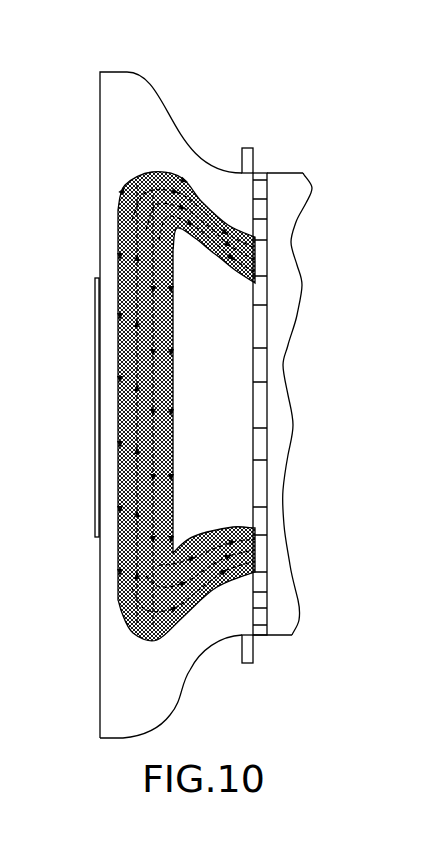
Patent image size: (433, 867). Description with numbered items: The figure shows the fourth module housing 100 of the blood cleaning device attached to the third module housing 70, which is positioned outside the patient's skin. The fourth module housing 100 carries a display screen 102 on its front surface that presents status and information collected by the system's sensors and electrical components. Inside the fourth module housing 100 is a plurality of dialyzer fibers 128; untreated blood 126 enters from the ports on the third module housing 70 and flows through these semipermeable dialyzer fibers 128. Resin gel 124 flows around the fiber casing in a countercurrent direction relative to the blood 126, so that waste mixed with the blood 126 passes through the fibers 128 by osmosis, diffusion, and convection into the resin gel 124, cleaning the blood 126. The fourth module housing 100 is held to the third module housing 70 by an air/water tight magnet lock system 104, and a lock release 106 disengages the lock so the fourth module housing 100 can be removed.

The third module housing 70 is at (305, 198).
The fourth module housing 100 is at (128, 82).
The display screen 102 is at (97, 337).
The magnet lock system 104 is at (260, 482).
The lock release 106 is at (252, 158).
The resin gel 124 is at (118, 235).
The blood 126 is at (133, 417).
The dialyzer fibers 128 is at (120, 590).